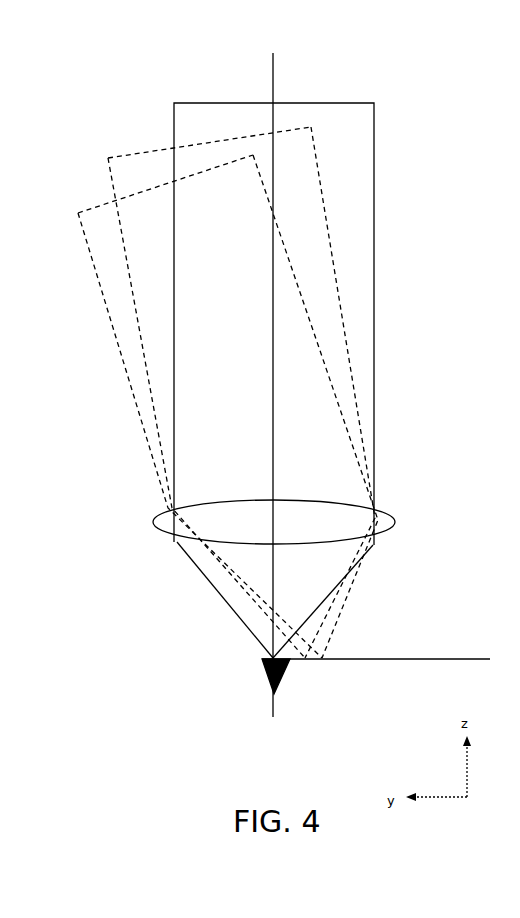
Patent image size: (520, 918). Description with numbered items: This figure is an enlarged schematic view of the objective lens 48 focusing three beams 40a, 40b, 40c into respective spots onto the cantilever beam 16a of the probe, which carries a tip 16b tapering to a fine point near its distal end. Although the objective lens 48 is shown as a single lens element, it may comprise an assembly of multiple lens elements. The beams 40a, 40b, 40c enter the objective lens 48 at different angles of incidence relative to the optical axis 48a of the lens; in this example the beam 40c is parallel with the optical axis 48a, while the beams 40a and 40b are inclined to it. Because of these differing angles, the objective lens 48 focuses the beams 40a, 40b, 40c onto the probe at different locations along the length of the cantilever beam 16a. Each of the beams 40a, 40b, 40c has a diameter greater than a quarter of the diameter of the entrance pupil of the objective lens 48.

The optical axis 48a is at (273, 80).
The beam 40a is at (315, 158).
The beam 40b is at (119, 340).
The beam 40c is at (374, 262).
The objective lens 48 is at (396, 521).
The cantilever beam 16a is at (319, 662).
The tip 16b is at (263, 670).